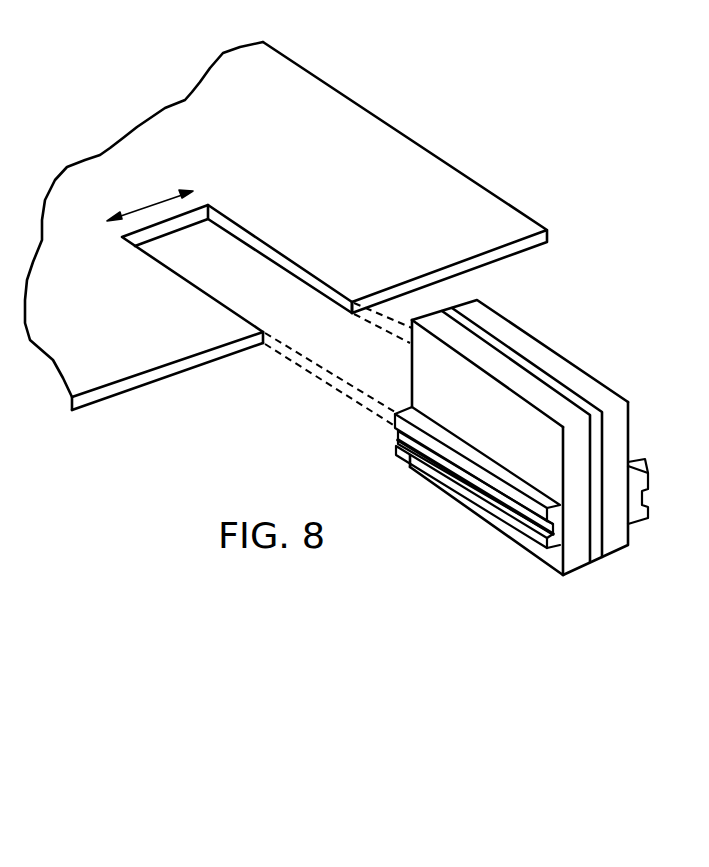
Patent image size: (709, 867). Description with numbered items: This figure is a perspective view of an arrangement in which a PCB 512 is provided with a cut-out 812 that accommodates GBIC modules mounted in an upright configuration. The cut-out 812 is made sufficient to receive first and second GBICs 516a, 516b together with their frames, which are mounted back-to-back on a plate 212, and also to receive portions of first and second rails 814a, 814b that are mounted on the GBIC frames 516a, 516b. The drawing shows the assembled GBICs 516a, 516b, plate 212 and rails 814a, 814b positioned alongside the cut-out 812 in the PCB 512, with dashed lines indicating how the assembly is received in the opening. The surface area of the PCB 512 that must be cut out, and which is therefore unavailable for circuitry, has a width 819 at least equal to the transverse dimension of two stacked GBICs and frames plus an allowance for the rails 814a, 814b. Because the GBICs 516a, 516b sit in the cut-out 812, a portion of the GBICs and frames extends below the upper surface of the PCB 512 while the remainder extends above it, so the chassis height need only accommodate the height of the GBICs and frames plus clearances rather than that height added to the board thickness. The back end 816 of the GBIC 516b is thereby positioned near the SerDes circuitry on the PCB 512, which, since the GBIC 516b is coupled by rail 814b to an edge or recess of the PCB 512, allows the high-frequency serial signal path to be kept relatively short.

The PCB 512 is at (402, 232).
The cut-out 812 is at (233, 213).
The width of the cut-out 819 is at (135, 207).
The back end of the GBIC 816 is at (460, 305).
The first GBIC 516a is at (486, 447).
The second GBIC 516b is at (520, 343).
The plate 212 is at (560, 387).
The first rail 814a is at (478, 458).
The second rail 814b is at (643, 468).